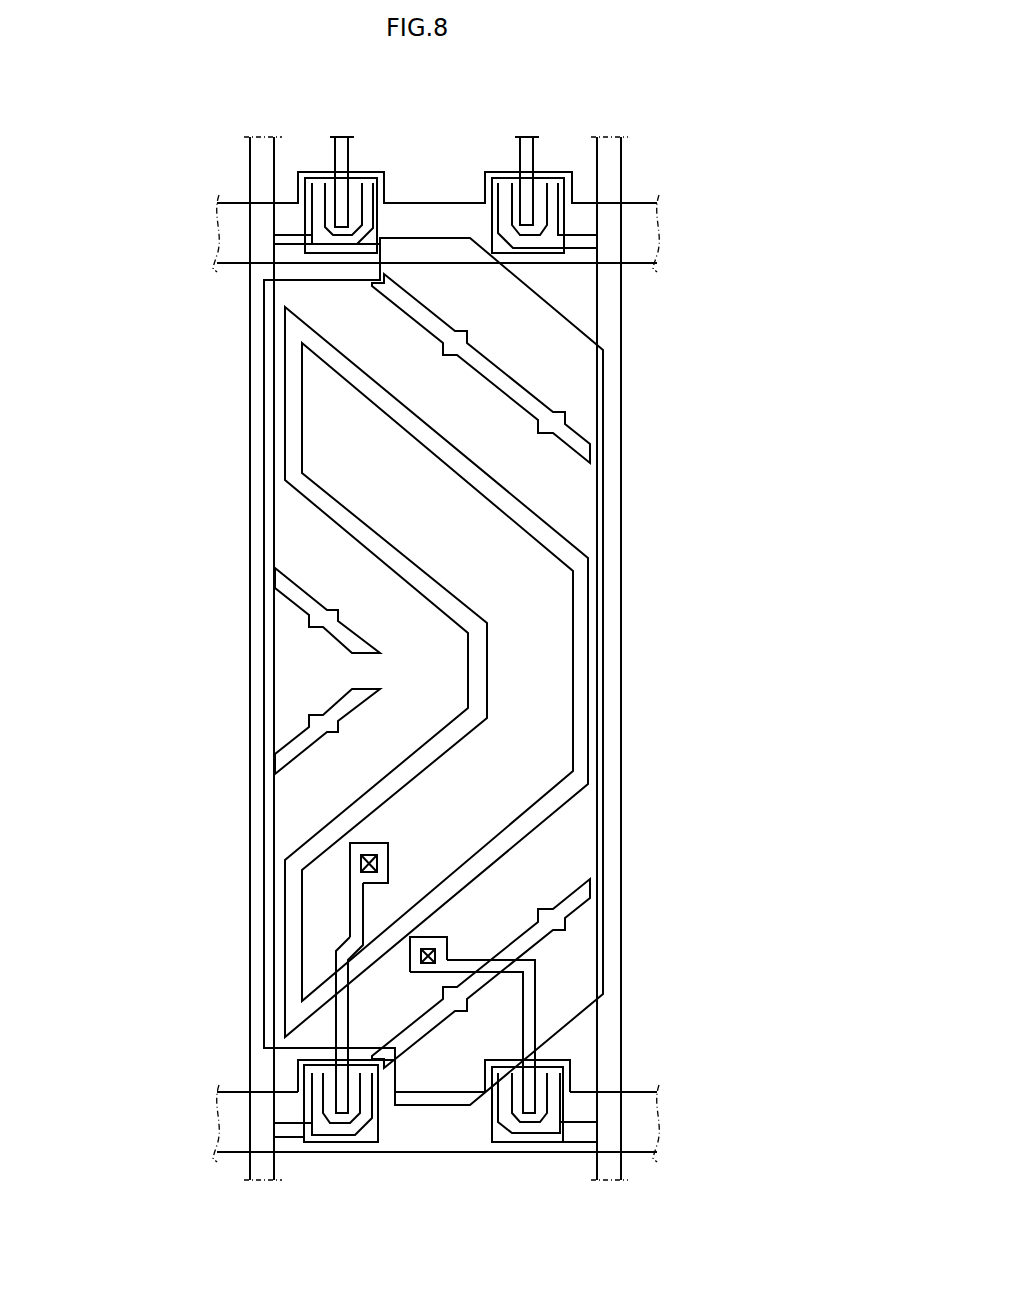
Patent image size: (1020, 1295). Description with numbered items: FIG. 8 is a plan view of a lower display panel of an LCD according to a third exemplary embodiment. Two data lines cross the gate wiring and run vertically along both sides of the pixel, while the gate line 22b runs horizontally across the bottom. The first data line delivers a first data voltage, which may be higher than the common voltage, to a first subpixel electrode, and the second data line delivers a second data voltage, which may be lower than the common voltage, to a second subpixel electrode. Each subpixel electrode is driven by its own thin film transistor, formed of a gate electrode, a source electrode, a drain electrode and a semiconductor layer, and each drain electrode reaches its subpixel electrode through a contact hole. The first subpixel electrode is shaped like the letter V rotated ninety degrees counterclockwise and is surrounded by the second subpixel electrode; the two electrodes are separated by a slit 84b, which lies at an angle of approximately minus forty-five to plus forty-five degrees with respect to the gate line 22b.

The gate line 22b is at (235, 1137).
The slit 84b is at (482, 477).